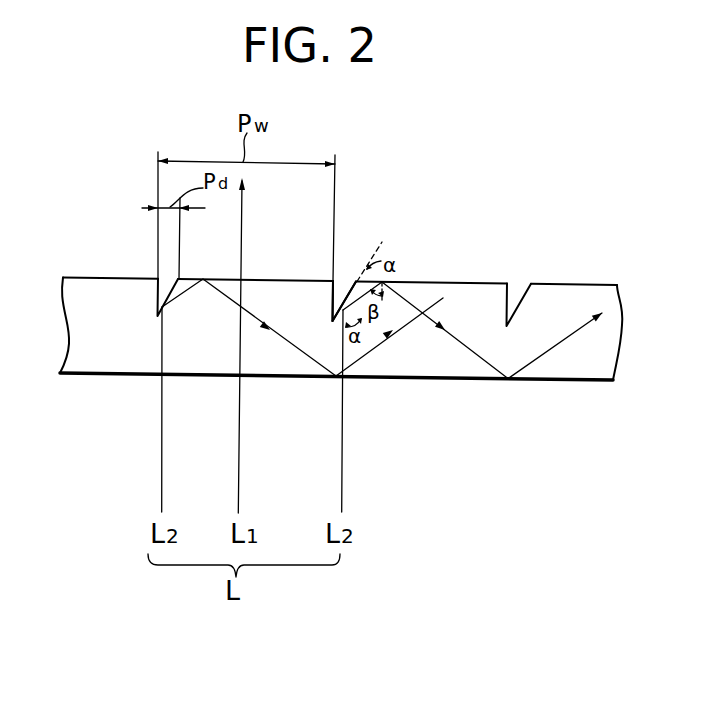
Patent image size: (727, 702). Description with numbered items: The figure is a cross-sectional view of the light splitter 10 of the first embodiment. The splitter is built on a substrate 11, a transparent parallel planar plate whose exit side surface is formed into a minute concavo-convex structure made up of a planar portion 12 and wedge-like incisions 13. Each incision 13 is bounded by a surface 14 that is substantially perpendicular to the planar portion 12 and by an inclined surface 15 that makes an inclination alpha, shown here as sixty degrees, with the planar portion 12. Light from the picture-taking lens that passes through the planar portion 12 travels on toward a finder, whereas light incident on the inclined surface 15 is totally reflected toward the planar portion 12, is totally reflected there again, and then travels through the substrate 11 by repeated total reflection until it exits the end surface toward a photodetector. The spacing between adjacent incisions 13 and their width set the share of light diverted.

The light splitter 10 is at (106, 272).
The substrate 11 is at (478, 297).
The planar portion 12 is at (285, 280).
The wedge-like incision 13 is at (345, 300).
The perpendicular surface 14 is at (332, 300).
The inclined surface 15 is at (348, 308).